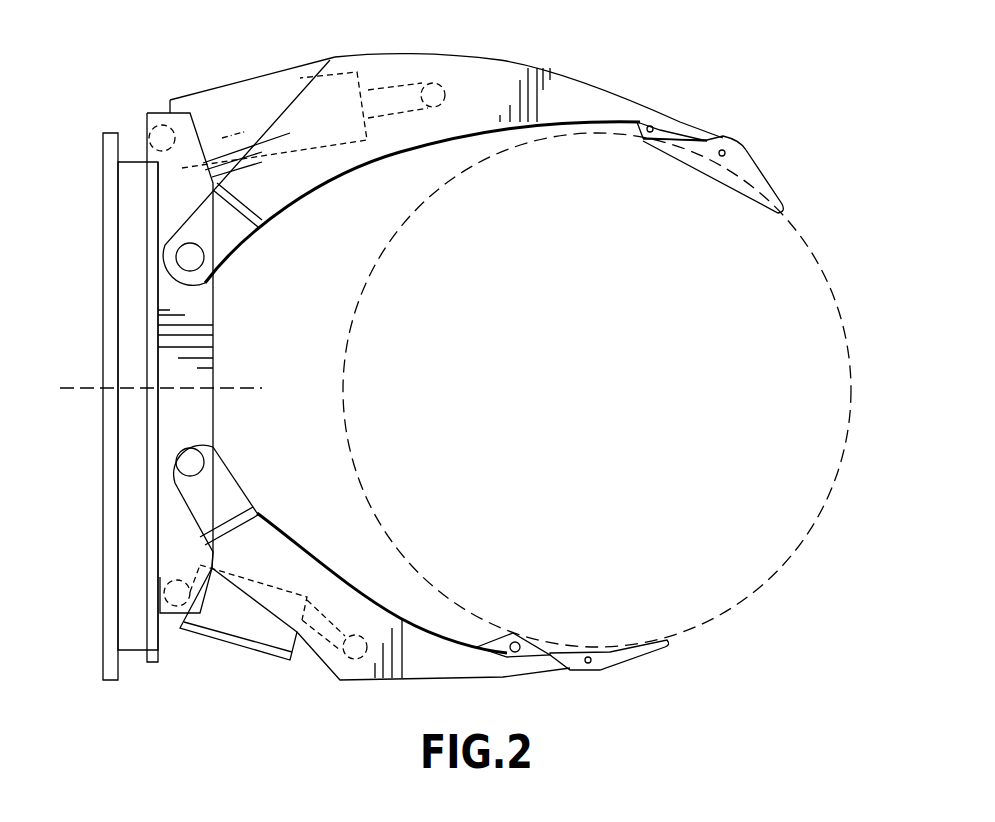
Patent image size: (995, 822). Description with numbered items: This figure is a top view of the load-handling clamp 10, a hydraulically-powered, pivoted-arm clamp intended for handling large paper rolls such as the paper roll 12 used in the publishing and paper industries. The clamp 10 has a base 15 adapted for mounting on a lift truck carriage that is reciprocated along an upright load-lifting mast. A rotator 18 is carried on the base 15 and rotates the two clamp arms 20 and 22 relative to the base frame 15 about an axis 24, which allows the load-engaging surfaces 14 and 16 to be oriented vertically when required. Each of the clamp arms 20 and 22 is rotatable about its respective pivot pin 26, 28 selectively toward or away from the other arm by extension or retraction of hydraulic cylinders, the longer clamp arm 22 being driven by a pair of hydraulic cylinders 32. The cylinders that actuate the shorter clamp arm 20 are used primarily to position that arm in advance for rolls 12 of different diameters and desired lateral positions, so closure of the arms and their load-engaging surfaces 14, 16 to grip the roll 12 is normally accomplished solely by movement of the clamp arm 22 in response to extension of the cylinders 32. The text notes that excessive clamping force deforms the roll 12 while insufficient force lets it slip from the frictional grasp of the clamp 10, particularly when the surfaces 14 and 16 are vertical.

The load-handling clamp 10 is at (662, 69).
The paper roll 12 is at (818, 263).
The load-engaging surface 14 is at (557, 640).
The base 15 is at (103, 210).
The load-engaging surface 16 is at (752, 188).
The rotator 18 is at (136, 162).
The clamp arm 20 is at (420, 678).
The clamp arm 22 is at (565, 70).
The axis 24 is at (78, 388).
The pivot pin 26 is at (192, 462).
The pivot pin 28 is at (192, 258).
The hydraulic cylinders 32 is at (245, 88).